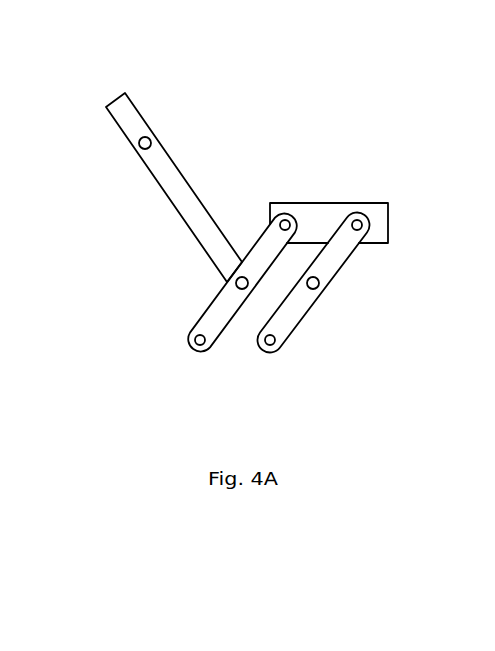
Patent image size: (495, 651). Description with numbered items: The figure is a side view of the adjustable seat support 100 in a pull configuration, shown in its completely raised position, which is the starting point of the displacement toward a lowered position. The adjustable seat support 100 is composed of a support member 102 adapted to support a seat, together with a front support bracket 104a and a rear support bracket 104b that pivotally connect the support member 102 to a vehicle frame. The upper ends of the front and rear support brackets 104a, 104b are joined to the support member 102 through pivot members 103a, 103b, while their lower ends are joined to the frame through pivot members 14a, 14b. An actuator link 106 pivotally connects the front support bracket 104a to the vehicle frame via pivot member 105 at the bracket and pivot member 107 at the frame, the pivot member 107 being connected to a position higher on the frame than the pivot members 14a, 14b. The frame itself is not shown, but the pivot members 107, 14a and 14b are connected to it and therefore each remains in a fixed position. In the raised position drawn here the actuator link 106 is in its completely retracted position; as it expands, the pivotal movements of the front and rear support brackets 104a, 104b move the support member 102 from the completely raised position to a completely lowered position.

The adjustable seat support 100 is at (351, 125).
The support member 102 is at (373, 213).
The pivot member 103a is at (287, 220).
The pivot member 103b is at (357, 226).
The front support bracket 104a is at (213, 313).
The rear support bracket 104b is at (297, 302).
The pivot member 105 is at (225, 283).
The actuator link 106 is at (165, 182).
The pivot member 107 is at (155, 141).
The pivot member 14a is at (190, 340).
The pivot member 14b is at (285, 347).